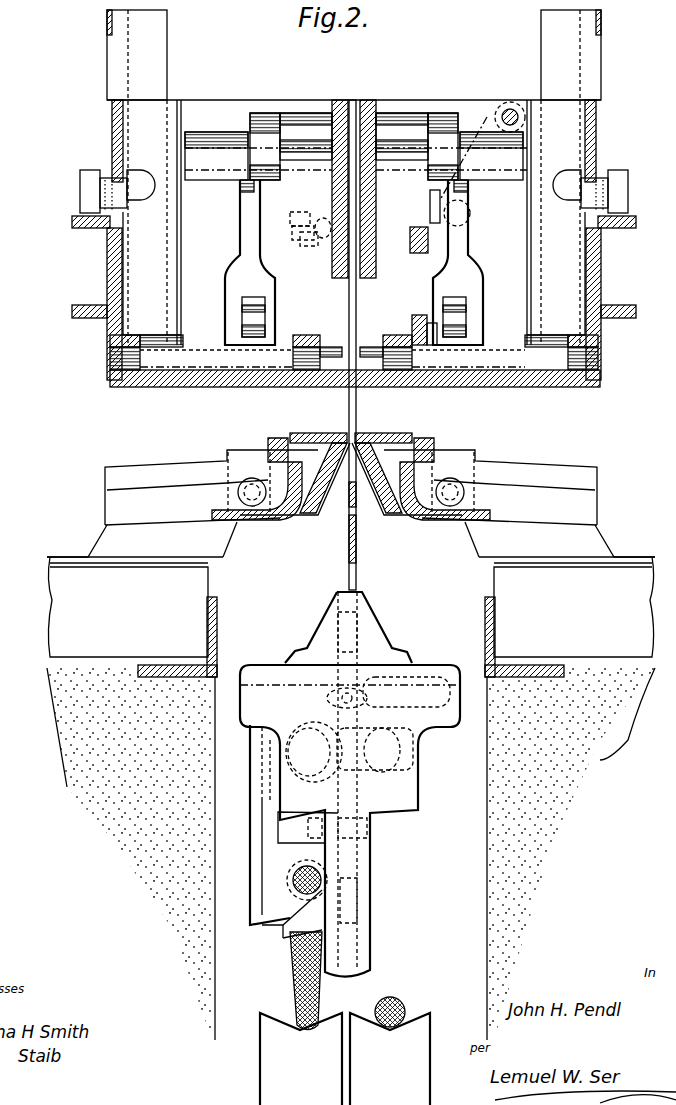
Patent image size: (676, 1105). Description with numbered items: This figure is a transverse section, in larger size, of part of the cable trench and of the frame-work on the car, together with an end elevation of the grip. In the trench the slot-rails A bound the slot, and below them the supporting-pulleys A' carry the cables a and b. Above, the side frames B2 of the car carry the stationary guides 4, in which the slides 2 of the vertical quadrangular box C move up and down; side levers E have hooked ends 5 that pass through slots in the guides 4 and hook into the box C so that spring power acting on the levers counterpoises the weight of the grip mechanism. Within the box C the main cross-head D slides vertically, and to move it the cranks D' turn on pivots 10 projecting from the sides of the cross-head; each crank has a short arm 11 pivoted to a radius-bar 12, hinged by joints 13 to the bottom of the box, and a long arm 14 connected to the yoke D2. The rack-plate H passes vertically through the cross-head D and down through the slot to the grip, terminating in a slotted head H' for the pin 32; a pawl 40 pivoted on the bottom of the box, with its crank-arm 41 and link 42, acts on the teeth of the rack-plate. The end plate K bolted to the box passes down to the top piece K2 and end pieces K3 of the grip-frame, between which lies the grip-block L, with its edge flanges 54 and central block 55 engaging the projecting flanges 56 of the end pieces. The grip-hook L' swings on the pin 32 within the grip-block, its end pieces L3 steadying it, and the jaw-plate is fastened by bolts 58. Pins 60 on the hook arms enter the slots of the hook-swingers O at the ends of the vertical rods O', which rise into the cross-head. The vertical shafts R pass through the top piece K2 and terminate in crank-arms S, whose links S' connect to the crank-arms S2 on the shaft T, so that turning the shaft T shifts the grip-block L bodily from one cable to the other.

The stationary guides 4 is at (354, 177).
The vertical quadrangular box C is at (122, 268).
The slides 2 is at (357, 222).
The hooked ends 5 is at (354, 185).
The side levers E is at (351, 191).
The side frames B2 is at (354, 267).
The joints 13 is at (355, 361).
The pawl 40 is at (383, 340).
The crank-arm 41 is at (412, 315).
The link 42 is at (427, 330).
The radius-bar 12 is at (356, 196).
The short arm 11 is at (275, 113).
The pivots 10 is at (250, 118).
The main cross-head D is at (362, 175).
The rack-plate H is at (347, 327).
The shaft T is at (512, 108).
The crank-arms S2 is at (490, 112).
The links S' is at (294, 235).
The crank-arms S is at (315, 246).
The cranks D' is at (354, 255).
The long arm 14 is at (255, 268).
The yoke D2 is at (265, 305).
The slot-rails A is at (351, 468).
The vertical rods O' is at (338, 502).
The vertical shafts R is at (349, 528).
The vertical end plate K is at (349, 572).
The top piece K2 is at (348, 627).
The hook-swingers O is at (354, 689).
The pins 60 is at (341, 696).
The end pieces K3 is at (349, 784).
The pin 32 is at (343, 752).
The head H' is at (396, 749).
The edge flanges 54 is at (260, 790).
The central block 55 is at (278, 830).
The bolts 58 is at (367, 830).
The grip-block L is at (256, 825).
The end pieces L3 is at (292, 914).
The grip-hook L' is at (286, 949).
The projecting flanges 56 is at (357, 950).
The cable a is at (293, 878).
The cable b is at (394, 1006).
The supporting-pulleys A' is at (345, 1059).